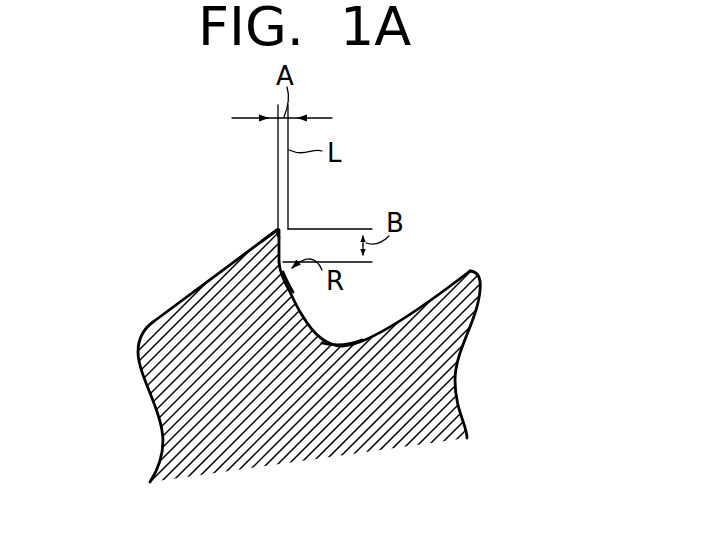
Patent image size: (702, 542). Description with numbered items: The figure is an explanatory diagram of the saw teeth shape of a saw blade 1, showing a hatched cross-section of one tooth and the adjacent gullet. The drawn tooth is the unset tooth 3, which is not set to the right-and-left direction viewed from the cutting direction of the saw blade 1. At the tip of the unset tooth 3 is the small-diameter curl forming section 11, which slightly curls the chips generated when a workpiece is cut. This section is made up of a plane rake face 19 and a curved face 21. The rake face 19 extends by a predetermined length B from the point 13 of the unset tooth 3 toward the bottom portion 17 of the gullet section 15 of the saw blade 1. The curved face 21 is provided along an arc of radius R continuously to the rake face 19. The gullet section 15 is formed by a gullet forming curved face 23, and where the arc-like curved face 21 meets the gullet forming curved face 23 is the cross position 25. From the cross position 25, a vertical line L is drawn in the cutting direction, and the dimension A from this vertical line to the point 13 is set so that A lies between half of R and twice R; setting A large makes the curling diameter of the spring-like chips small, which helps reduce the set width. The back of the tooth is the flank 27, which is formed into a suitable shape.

The saw blade 1 is at (116, 343).
The unset tooth 3 is at (159, 292).
The small-diameter curl forming section 11 is at (292, 227).
The point 13 is at (279, 229).
The gullet section 15 is at (355, 312).
The bottom portion 17 is at (349, 331).
The rake face 19 is at (261, 238).
The curved face 21 is at (285, 276).
The gullet forming curved face 23 is at (293, 283).
The cross position 25 is at (289, 277).
The flank 27 is at (155, 322).